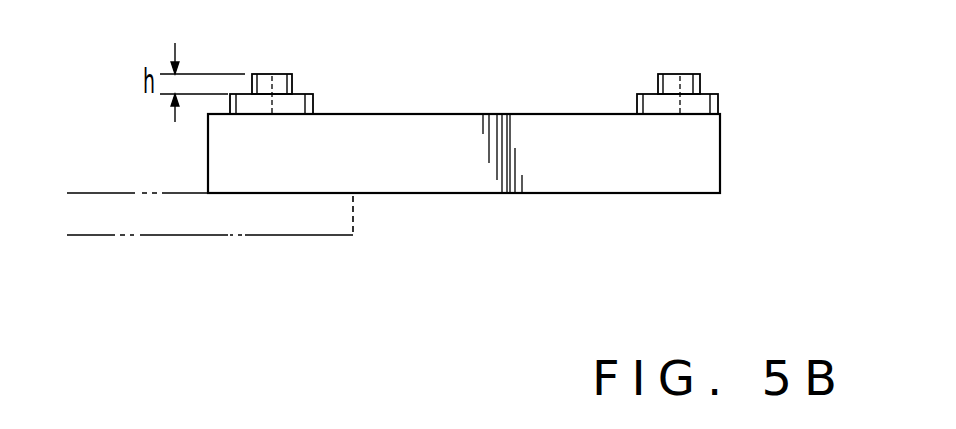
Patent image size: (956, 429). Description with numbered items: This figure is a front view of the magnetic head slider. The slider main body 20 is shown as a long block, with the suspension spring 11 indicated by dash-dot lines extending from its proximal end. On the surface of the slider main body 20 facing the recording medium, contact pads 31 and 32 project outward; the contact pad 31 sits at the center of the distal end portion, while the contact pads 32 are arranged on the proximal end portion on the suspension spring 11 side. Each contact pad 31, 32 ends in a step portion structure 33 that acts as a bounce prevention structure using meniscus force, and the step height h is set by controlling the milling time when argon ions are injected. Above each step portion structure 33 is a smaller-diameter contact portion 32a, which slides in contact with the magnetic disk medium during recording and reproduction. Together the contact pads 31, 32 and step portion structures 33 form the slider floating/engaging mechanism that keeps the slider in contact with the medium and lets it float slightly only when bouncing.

The suspension spring 11 is at (190, 226).
The slider main body 20 is at (636, 177).
The contact pad 31 is at (720, 100).
The contact pad 32 is at (313, 100).
The contact portion 32a is at (287, 75).
The step portion structure 33 is at (245, 92).